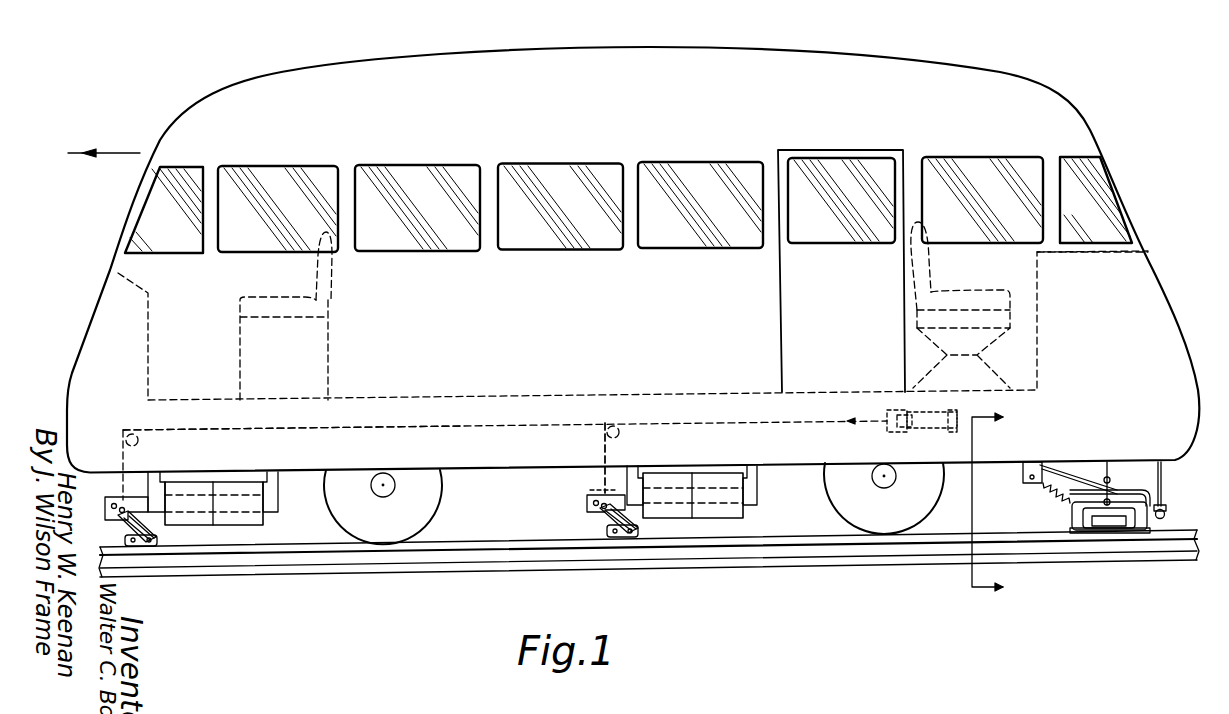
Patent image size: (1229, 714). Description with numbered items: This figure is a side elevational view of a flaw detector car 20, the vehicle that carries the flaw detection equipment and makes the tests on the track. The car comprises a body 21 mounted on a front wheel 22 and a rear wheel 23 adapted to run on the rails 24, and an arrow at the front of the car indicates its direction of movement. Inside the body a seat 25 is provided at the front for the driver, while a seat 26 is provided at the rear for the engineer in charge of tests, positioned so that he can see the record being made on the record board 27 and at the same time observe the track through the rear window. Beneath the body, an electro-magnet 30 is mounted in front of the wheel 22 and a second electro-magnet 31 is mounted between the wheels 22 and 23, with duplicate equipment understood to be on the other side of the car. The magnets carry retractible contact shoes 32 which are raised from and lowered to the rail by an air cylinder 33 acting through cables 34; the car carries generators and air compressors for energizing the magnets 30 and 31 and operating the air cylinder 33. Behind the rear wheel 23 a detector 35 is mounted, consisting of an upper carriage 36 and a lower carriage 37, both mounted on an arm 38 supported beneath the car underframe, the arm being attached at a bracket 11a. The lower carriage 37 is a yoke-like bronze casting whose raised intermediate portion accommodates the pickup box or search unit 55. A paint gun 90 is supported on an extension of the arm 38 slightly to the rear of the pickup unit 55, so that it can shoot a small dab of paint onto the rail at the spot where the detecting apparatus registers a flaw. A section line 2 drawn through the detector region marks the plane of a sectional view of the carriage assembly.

The detector car 20 is at (1076, 114).
The body 21 is at (1147, 278).
The wheel 22 is at (432, 503).
The wheel 23 is at (838, 500).
The rails 24 is at (425, 560).
The seat 25 is at (332, 300).
The seat 26 is at (932, 263).
The record board 27 is at (1094, 251).
The electro-magnet 30 is at (203, 487).
The second electro-magnet 31 is at (678, 478).
The retractible contact shoes 32 is at (147, 546).
The air cylinder 33 is at (908, 410).
The cables 34 is at (462, 428).
The detector 35 is at (1150, 487).
The upper carriage 36 is at (1160, 500).
The lower carriage 37 is at (1131, 500).
The arm 38 is at (1069, 478).
The pickup box 55 is at (1108, 533).
The paint gun 90 is at (1167, 514).
The bracket 11a is at (1025, 474).
The section line 2- 2 is at (996, 503).